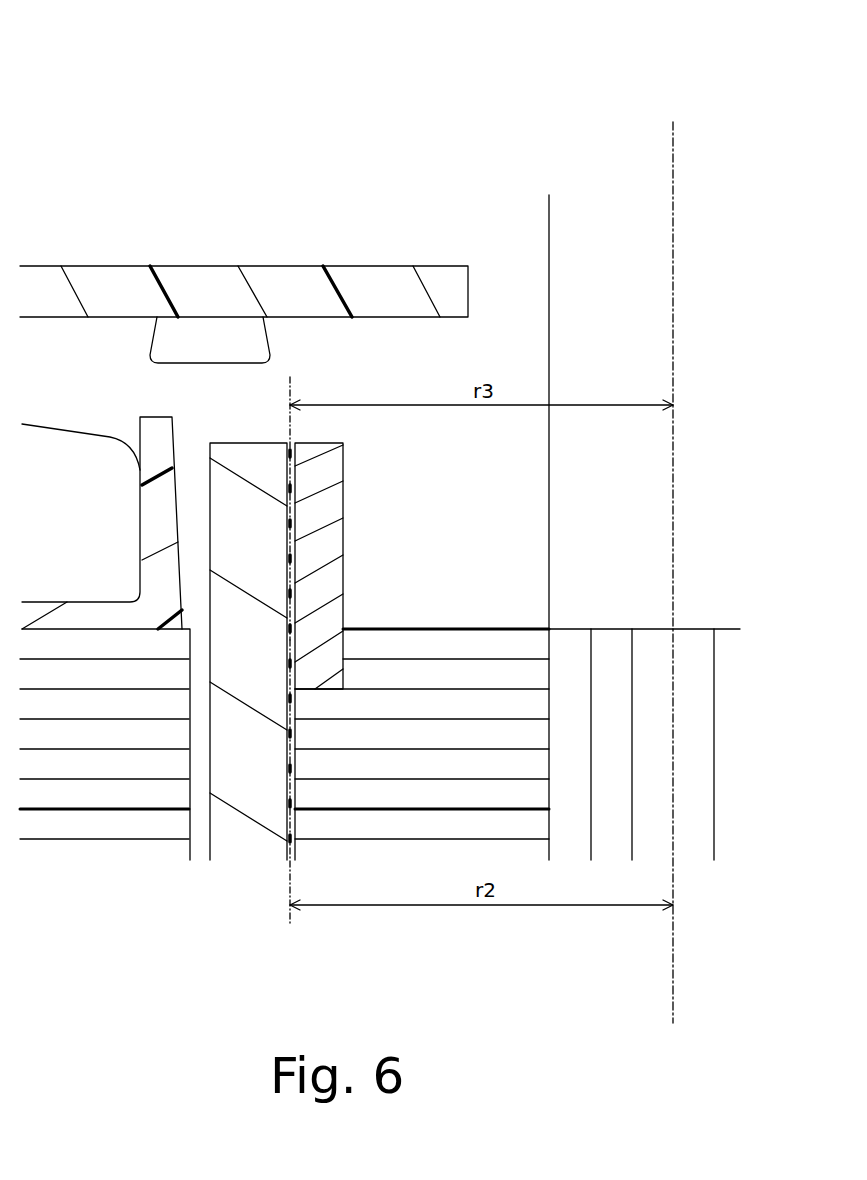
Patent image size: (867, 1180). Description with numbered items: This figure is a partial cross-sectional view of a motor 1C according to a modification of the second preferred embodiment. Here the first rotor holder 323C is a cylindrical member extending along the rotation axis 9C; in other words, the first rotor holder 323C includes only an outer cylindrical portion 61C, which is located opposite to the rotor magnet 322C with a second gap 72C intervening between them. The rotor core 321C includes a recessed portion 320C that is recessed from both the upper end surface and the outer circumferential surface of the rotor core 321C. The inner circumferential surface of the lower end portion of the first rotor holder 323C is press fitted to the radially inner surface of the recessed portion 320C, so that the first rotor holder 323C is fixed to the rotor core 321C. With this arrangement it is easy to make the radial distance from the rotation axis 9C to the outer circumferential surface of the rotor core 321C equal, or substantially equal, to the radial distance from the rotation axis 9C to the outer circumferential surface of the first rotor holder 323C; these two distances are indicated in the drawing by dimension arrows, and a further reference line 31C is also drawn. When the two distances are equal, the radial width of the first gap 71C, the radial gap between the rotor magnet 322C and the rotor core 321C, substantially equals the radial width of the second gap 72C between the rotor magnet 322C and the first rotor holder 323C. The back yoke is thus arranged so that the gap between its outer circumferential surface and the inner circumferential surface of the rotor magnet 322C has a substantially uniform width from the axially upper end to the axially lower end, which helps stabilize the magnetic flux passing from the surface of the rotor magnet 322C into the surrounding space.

The motor 1C is at (65, 128).
The rotation axis 9C is at (675, 167).
The rotor outer surface 31C is at (568, 237).
The outer cylindrical portion 61C is at (328, 540).
The first gap 71C is at (290, 793).
The second gap 72C is at (287, 478).
The recessed portion 320C is at (317, 662).
The rotor core 321C is at (497, 765).
The rotor magnet 322C is at (240, 778).
The first rotor holder 323C is at (360, 470).